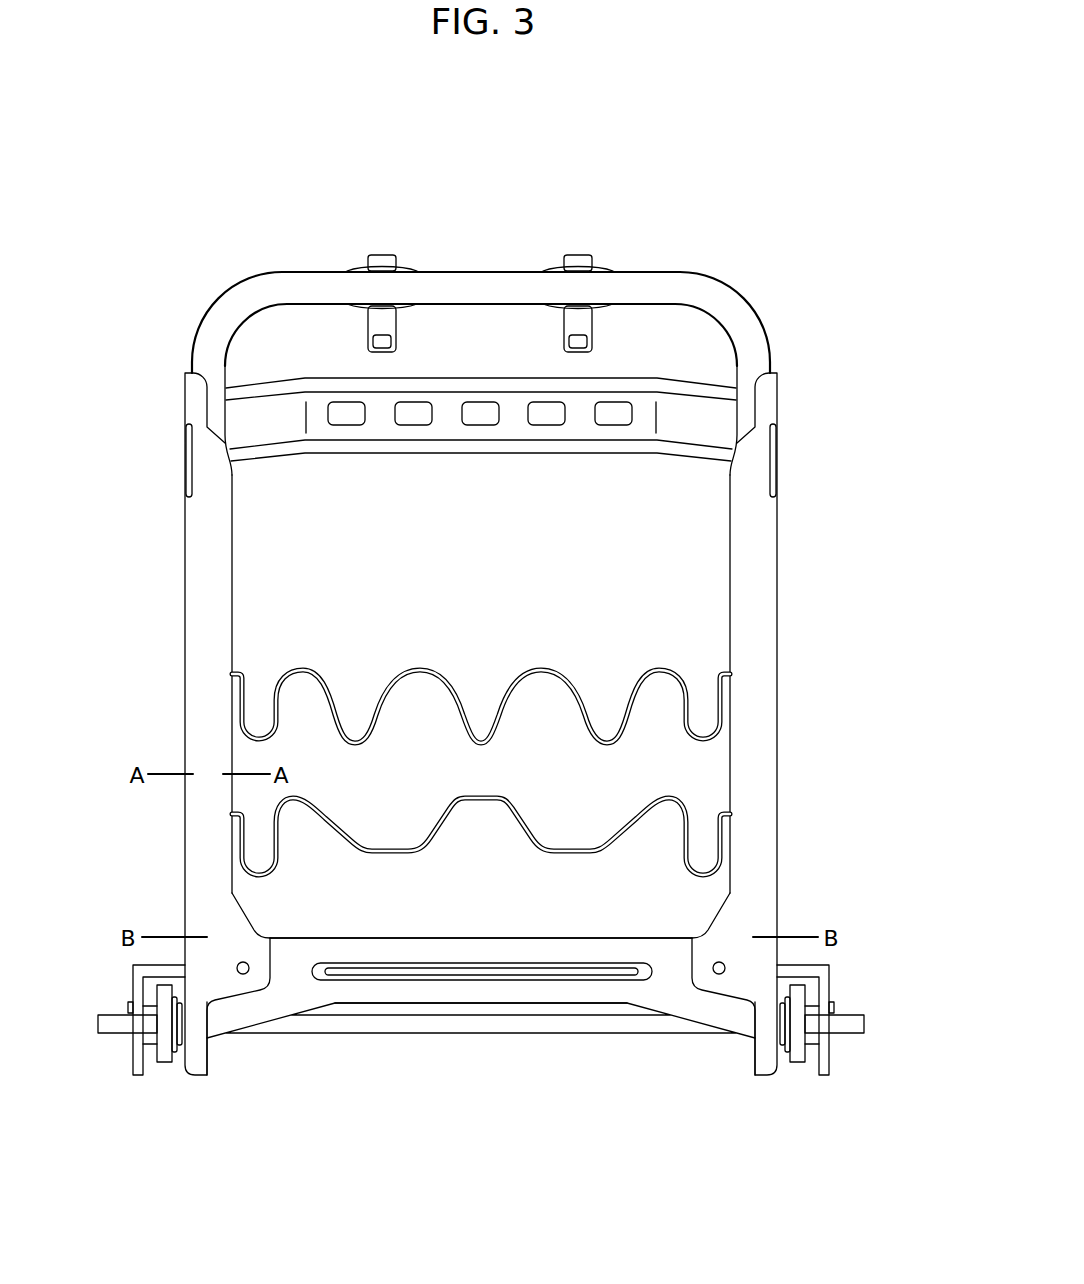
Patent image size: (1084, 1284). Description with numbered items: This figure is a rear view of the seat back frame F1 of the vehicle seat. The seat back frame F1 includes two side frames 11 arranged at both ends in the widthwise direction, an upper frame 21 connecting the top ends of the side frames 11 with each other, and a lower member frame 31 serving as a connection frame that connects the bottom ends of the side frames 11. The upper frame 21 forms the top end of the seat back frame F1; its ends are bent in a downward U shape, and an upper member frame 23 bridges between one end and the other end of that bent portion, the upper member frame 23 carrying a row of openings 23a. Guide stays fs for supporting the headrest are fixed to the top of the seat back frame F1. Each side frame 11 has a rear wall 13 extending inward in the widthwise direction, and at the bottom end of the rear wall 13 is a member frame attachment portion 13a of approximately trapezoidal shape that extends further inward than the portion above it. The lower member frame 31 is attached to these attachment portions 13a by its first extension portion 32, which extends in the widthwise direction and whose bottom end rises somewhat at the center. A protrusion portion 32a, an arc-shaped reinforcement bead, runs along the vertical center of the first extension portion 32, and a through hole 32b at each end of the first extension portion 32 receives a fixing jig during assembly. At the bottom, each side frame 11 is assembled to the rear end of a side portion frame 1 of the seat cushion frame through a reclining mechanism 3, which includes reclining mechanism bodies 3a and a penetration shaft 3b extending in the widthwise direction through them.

The side portion frame 1 is at (823, 1060).
The reclining mechanism 3 is at (509, 1074).
The reclining mechanism body 3a is at (795, 1055).
The penetration shaft 3b is at (848, 1020).
The side frame 11 is at (162, 542).
The rear wall 13 is at (644, 600).
The member frame attachment portion 13a is at (730, 933).
The upper frame 21 is at (666, 277).
The upper member frame 23 is at (432, 447).
The hole 23a is at (547, 420).
The lower member frame 31 is at (432, 912).
The first extension portion 32 is at (578, 948).
The protrusion portion 32a is at (500, 970).
The through hole 32b is at (682, 1113).
The guide stay fs is at (577, 256).
The seat back frame F1 is at (756, 271).